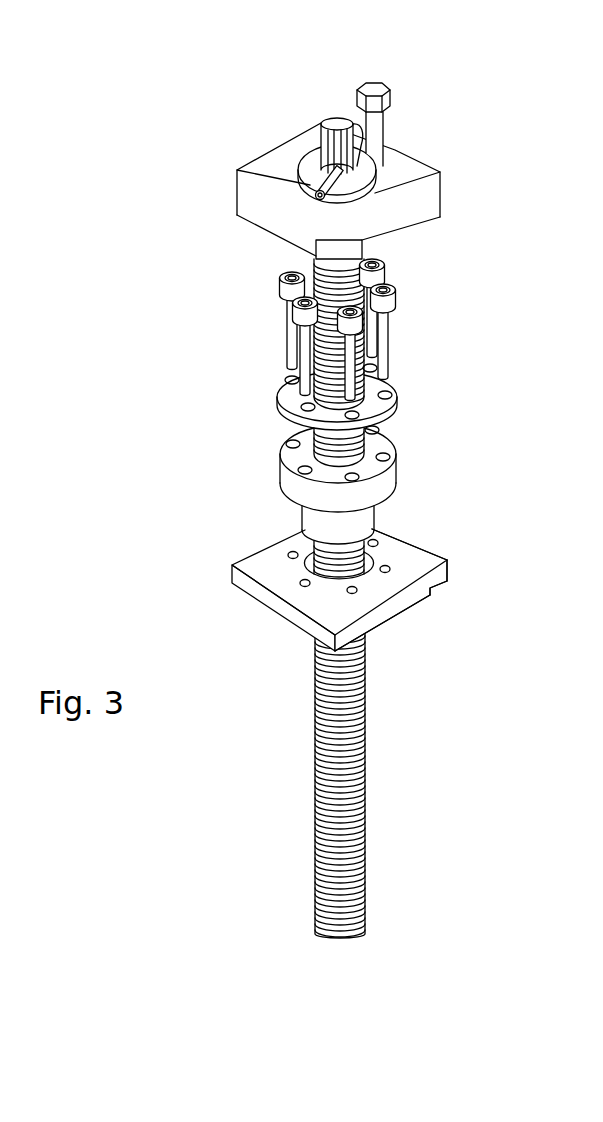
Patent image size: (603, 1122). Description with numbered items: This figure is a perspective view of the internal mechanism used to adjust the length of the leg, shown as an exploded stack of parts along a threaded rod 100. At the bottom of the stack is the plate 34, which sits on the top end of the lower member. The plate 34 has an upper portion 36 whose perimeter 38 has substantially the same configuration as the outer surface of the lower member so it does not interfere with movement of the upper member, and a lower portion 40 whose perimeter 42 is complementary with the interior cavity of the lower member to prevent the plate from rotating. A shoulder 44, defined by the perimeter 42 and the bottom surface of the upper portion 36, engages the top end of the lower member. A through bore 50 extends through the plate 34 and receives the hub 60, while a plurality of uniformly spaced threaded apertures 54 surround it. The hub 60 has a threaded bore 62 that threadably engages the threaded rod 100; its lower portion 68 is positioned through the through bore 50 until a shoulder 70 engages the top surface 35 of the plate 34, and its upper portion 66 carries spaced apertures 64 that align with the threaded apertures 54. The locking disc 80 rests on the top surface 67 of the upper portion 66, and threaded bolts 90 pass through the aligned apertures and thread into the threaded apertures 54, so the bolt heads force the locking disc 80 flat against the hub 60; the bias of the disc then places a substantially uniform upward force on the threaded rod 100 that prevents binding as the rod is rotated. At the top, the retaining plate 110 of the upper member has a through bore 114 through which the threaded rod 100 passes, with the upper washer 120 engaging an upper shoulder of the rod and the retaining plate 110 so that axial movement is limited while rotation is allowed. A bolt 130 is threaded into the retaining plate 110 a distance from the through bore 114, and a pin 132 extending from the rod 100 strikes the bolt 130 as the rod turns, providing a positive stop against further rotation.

The threaded rod 100 is at (335, 130).
The retaining plate 110 is at (281, 142).
The through bore 114 is at (332, 194).
The upper washer 120 is at (363, 170).
The bolt 130 is at (374, 128).
The pin 132 is at (315, 181).
The threaded bolt 90 is at (388, 323).
The locking disc 80 is at (380, 394).
The hub 60 is at (397, 463).
The threaded bore 62 is at (291, 437).
The apertures 64 is at (282, 458).
The upper portion 66 is at (301, 492).
The top surface 67 is at (375, 445).
The lower portion 68 is at (338, 522).
The shoulder 70 is at (304, 503).
The plate 34 is at (248, 583).
The top surface 35 is at (423, 558).
The upper portion 36 is at (448, 567).
The perimeter 38 is at (410, 537).
The lower portion 40 is at (412, 609).
The perimeter 42 is at (385, 610).
The shoulder 44 is at (430, 590).
The through bore 50 is at (303, 557).
The threaded apertures 54 is at (350, 592).